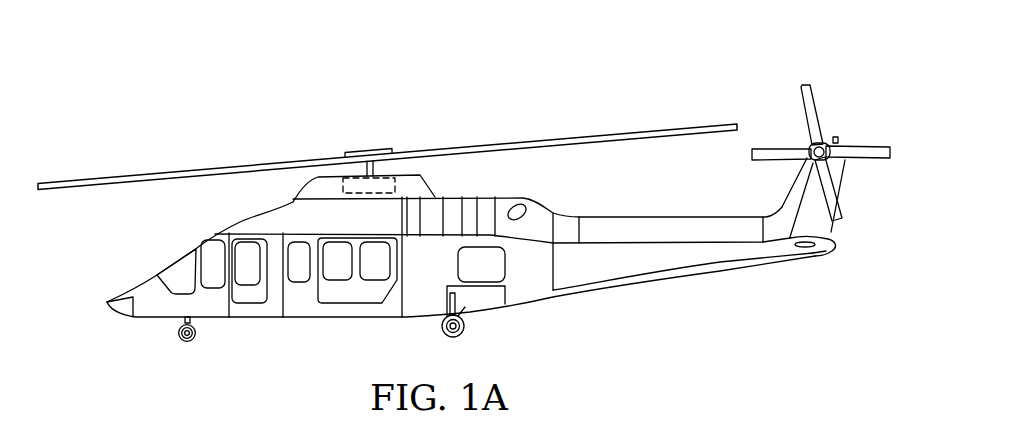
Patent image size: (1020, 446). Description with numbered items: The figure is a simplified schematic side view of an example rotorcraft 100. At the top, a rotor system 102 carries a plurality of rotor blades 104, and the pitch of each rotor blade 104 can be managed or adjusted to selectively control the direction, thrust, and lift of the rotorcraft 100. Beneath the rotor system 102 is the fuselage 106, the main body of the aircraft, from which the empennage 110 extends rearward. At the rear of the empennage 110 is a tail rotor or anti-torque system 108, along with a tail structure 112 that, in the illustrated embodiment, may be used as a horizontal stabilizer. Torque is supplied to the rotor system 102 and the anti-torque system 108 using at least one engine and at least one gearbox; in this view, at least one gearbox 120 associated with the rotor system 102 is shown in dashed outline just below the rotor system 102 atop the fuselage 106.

The rotorcraft 100 is at (245, 72).
The rotor system 102 is at (382, 133).
The rotor blade 104 is at (202, 170).
The fuselage 106 is at (302, 318).
The tail rotor or anti-torque system 108 is at (843, 125).
The empennage 110 is at (687, 273).
The tail structure 112 is at (807, 248).
The gearbox 120 is at (395, 185).